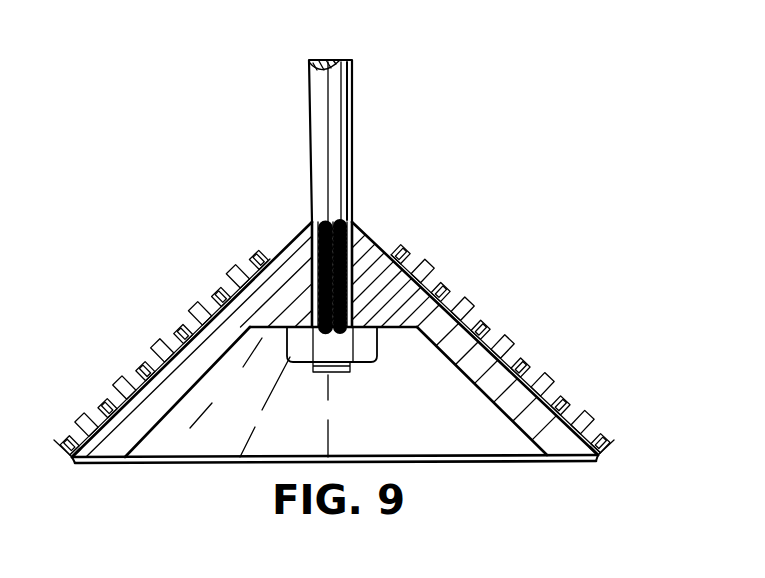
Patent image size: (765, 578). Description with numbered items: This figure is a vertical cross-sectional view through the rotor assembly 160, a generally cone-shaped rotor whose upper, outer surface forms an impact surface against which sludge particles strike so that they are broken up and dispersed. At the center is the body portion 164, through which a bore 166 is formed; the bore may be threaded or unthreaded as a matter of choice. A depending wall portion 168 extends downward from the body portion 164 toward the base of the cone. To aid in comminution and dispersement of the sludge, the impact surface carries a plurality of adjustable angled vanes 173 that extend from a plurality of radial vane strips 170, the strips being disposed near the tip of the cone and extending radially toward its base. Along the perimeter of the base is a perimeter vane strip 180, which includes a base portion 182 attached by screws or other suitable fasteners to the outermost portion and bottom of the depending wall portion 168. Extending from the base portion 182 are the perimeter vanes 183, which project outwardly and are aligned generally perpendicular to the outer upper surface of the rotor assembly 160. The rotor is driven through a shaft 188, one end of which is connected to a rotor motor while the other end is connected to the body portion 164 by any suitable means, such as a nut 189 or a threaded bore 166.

The rotor assembly 160 is at (226, 208).
The body portion 164 is at (358, 245).
The bore 166 is at (325, 244).
The depending wall portion 168 is at (158, 400).
The radial vane strips 170 is at (205, 334).
The adjustable angled vanes 173 is at (227, 275).
The perimeter vane strip 180 is at (68, 468).
The base portion 182 is at (98, 463).
The perimeter vanes 183 is at (54, 425).
The shaft 188 is at (328, 120).
The nut 189 is at (367, 352).